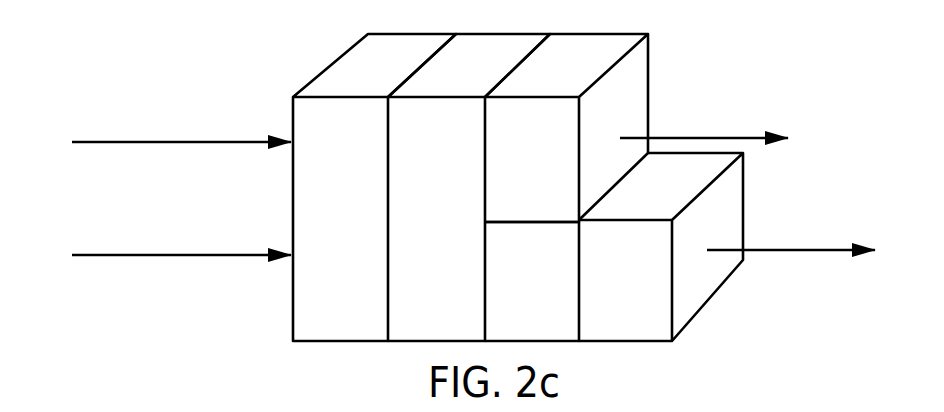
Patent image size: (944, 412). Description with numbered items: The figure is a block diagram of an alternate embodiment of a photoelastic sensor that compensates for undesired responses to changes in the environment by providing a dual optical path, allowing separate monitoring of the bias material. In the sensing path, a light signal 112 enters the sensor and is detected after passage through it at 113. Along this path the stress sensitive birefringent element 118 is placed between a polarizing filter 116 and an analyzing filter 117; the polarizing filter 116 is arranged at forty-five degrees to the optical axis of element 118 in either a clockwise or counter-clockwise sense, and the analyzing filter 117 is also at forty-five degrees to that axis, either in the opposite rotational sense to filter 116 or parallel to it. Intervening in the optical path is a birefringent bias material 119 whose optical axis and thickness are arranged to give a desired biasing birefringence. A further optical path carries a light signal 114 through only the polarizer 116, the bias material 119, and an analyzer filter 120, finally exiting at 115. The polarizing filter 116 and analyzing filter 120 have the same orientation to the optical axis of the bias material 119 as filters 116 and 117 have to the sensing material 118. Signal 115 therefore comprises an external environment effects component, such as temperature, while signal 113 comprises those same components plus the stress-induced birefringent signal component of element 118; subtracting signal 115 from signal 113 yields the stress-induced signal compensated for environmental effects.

The light signal 112 is at (150, 255).
The light signal 114 is at (152, 142).
The polarizing filter 116 is at (367, 232).
The birefringent material 119 is at (462, 246).
The analyzer filter 120 is at (557, 175).
The stress sensitive birefringent element 118 is at (557, 287).
The analyzing filter 117 is at (645, 290).
The light signal 115 is at (713, 138).
The light signal 113 is at (807, 250).